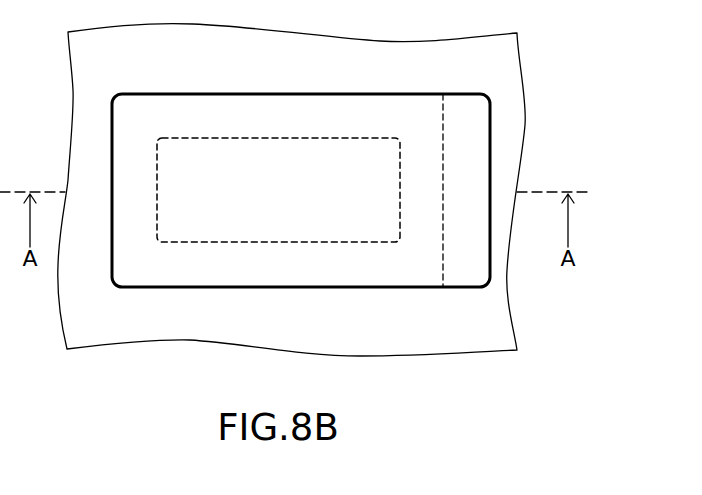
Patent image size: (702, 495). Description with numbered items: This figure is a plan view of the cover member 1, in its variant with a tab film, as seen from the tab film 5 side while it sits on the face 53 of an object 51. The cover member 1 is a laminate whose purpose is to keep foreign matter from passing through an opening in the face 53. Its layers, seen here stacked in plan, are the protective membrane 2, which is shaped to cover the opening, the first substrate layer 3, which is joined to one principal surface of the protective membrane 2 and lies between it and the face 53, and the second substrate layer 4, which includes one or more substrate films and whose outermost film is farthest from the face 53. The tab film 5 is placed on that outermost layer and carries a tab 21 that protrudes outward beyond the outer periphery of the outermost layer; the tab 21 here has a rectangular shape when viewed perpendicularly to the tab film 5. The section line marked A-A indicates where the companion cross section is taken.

The cover member 1 is at (175, 93).
The protective membrane 2 is at (275, 190).
The first substrate layer 3 is at (417, 120).
The second substrate layer 4 is at (373, 258).
The tab film 5 is at (293, 118).
The tab 21 is at (472, 133).
The object 51 is at (480, 313).
The face 53 is at (493, 63).